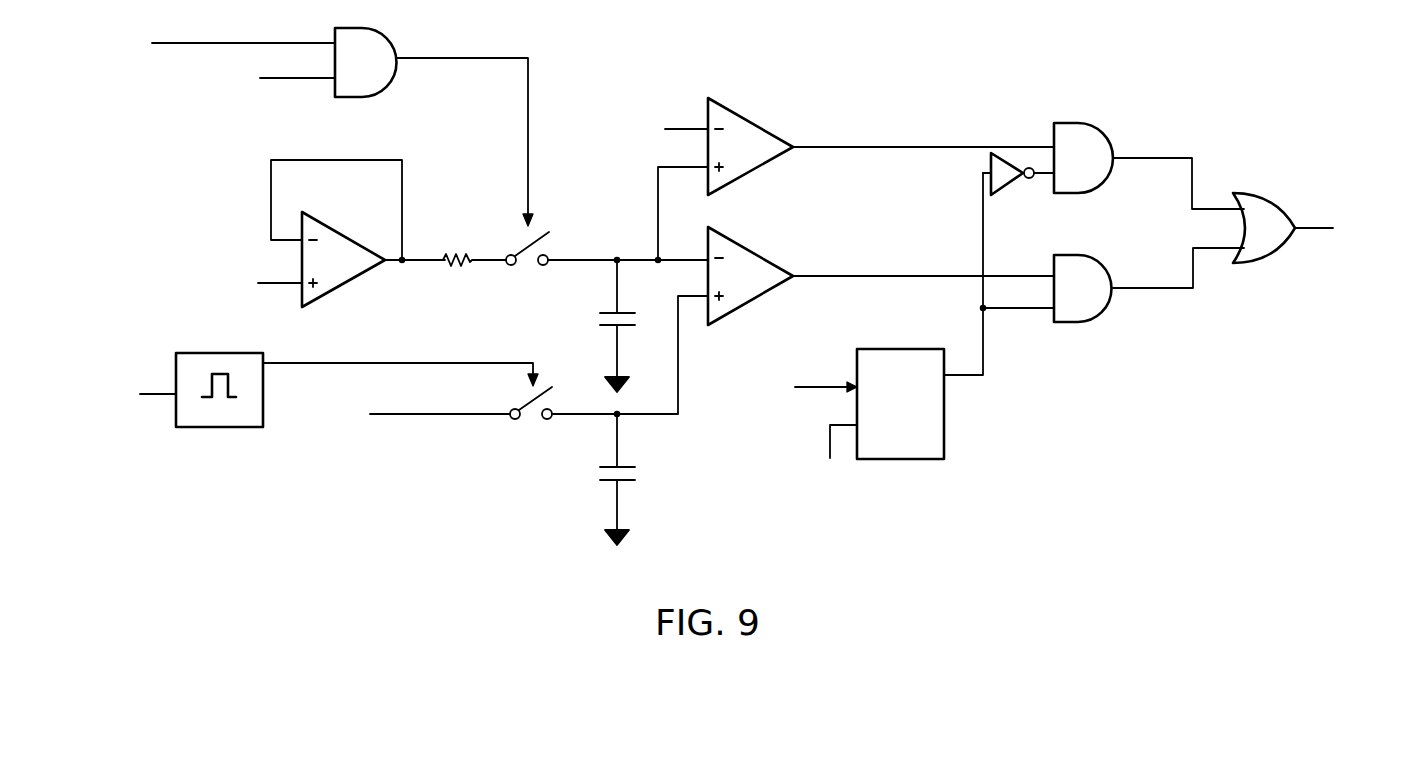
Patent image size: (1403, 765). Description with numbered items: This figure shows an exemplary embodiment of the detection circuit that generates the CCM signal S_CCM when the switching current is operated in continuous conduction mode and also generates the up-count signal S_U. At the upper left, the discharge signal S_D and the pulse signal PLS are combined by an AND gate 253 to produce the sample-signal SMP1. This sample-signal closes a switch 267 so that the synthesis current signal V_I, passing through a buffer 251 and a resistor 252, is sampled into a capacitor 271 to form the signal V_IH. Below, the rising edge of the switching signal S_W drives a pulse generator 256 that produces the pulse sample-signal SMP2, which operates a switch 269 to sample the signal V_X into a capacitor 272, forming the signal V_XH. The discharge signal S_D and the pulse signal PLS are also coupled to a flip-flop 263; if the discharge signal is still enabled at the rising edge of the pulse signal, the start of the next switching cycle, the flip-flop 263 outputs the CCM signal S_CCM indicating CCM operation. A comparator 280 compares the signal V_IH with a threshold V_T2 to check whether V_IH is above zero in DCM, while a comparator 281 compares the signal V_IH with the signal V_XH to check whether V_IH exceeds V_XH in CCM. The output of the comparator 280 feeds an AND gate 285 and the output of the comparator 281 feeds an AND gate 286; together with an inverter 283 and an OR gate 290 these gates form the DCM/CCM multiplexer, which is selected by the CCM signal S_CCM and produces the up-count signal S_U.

The AND gate 253 is at (324, 113).
The buffer 251 is at (330, 233).
The resistor 252 is at (474, 244).
The switch 267 is at (607, 223).
The capacitor 271 is at (594, 326).
The capacitor 272 is at (595, 479).
The pulse generator 256 is at (319, 404).
The switch 269 is at (521, 362).
The comparator 280 is at (841, 179).
The comparator 281 is at (881, 276).
The inverter 283 is at (1018, 186).
The AND gate 285 is at (1149, 154).
The AND gate 286 is at (1112, 276).
The OR gate 290 is at (1300, 217).
The flip-flop 263 is at (882, 349).